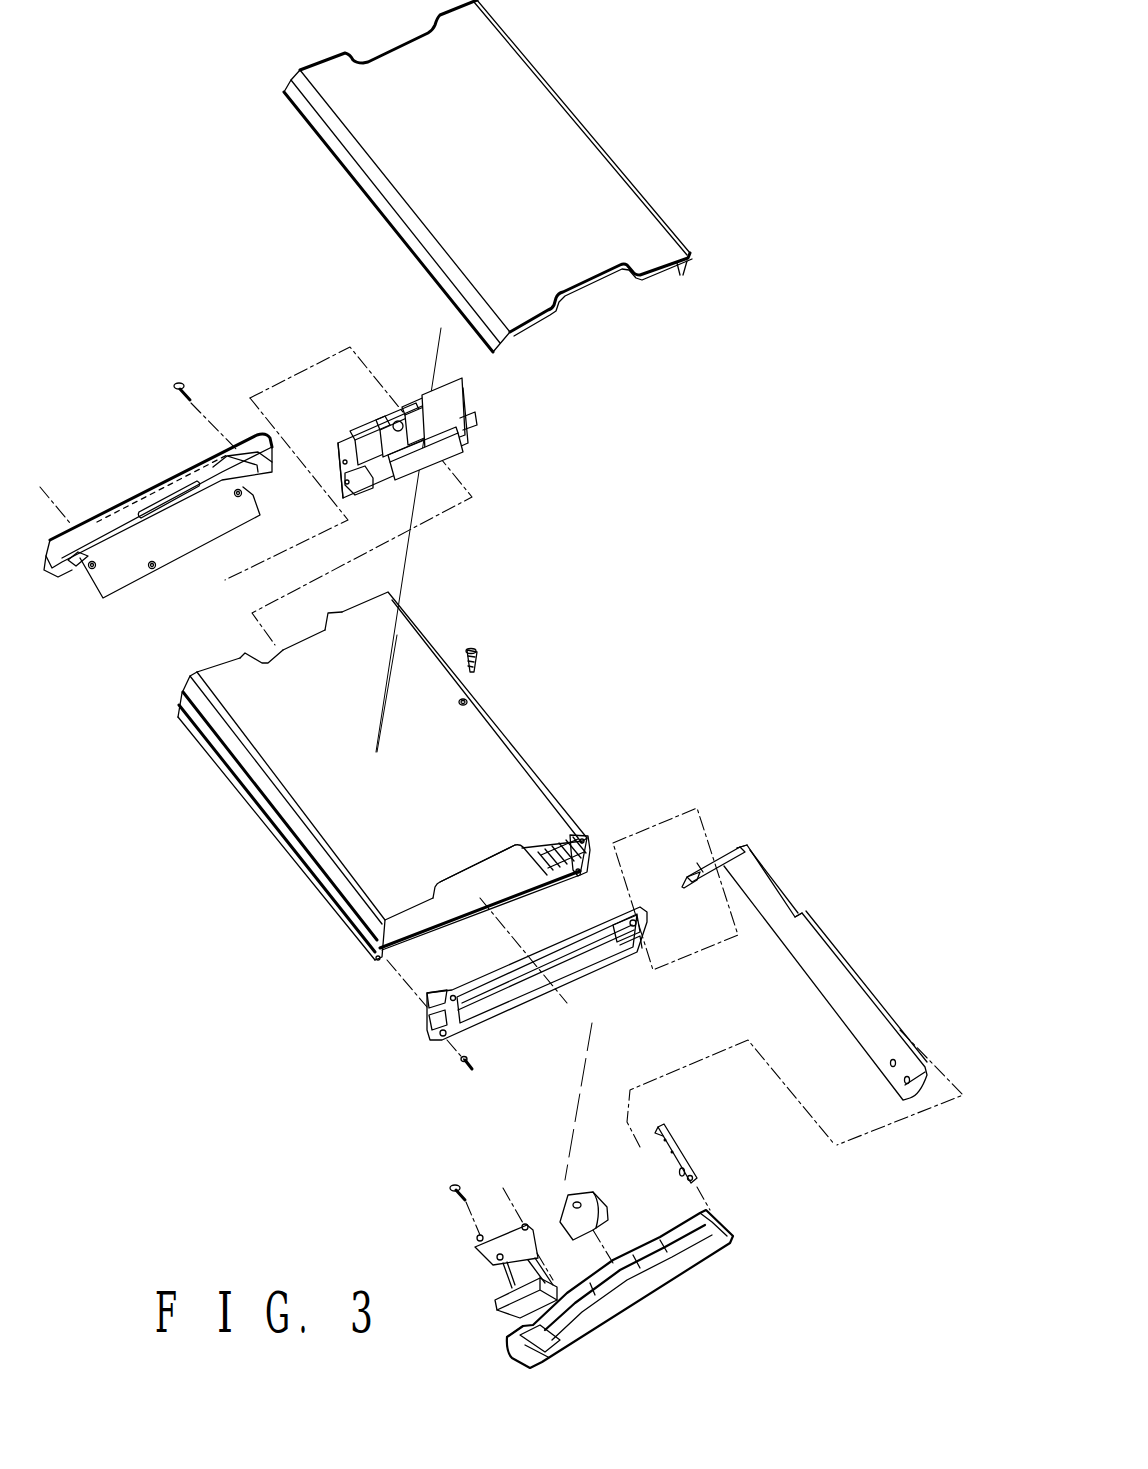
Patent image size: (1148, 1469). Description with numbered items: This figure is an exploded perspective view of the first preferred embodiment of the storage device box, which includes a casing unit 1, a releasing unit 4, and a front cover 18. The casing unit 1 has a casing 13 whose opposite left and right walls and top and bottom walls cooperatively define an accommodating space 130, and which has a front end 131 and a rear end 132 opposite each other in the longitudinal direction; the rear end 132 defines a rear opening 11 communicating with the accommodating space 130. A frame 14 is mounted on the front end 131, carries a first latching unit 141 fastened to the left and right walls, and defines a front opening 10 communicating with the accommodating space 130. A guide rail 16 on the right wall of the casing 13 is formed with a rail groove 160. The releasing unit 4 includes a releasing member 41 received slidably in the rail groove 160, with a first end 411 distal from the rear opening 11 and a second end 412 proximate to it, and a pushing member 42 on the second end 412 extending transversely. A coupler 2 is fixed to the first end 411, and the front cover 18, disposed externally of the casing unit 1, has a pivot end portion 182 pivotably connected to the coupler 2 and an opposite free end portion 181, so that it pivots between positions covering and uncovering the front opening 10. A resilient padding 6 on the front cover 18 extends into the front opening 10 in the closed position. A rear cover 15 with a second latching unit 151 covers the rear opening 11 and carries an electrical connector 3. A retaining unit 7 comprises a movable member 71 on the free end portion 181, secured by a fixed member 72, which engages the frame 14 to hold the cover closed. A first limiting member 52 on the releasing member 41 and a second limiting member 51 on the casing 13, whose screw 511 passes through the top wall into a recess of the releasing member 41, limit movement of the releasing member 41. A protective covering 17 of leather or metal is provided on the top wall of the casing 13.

The casing unit 1 is at (447, 610).
The coupler 2 is at (688, 1155).
The electrical connector 3 is at (450, 455).
The releasing unit 4 is at (790, 925).
The resilient padding 6 is at (605, 1202).
The retaining unit 7 is at (464, 1228).
The front opening 10 is at (577, 955).
The rear opening 11 is at (327, 623).
The casing 13 is at (404, 742).
The frame 14 is at (517, 1016).
The rear cover 15 is at (176, 473).
The guide rail 16 is at (572, 875).
The protective covering 17 is at (573, 260).
The front cover 18 is at (666, 1290).
The releasing member 41 is at (833, 953).
The pushing member 42 is at (687, 877).
The second limiting member 51 is at (518, 634).
The first limiting member 52 is at (780, 897).
The movable member 71 is at (500, 1303).
The fixed member 72 is at (510, 1233).
The accommodating space 130 is at (457, 890).
The front end 131 is at (492, 852).
The rear end 132 is at (286, 650).
The first latching unit 141 is at (428, 1020).
The second latching unit 151 is at (263, 460).
The rail groove 160 is at (565, 848).
The free end portion 181 is at (573, 1345).
The pivot end portion 182 is at (722, 1253).
The first end 411 is at (917, 1073).
The second end 412 is at (748, 860).
The screw 511 is at (469, 648).